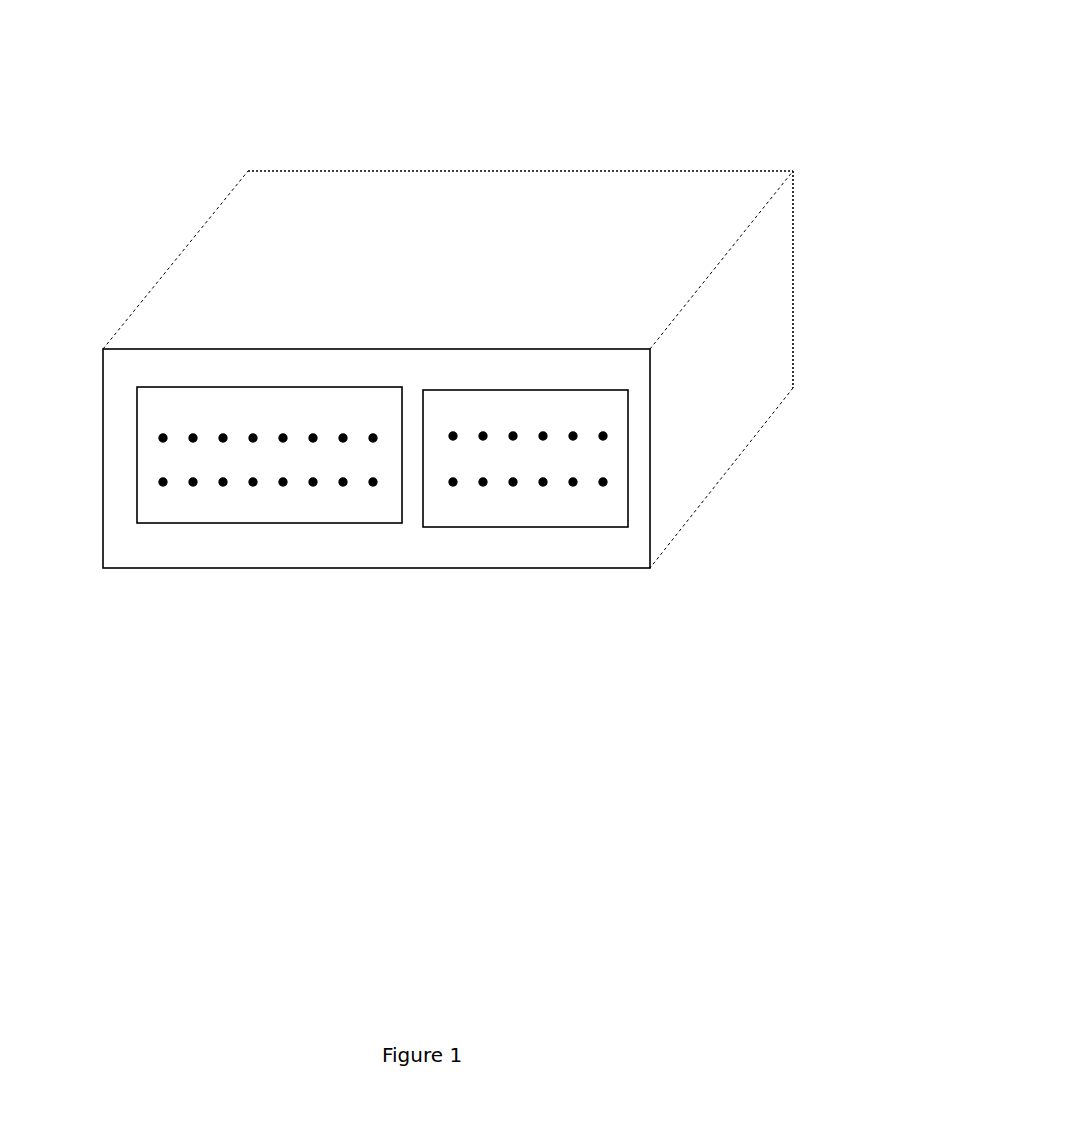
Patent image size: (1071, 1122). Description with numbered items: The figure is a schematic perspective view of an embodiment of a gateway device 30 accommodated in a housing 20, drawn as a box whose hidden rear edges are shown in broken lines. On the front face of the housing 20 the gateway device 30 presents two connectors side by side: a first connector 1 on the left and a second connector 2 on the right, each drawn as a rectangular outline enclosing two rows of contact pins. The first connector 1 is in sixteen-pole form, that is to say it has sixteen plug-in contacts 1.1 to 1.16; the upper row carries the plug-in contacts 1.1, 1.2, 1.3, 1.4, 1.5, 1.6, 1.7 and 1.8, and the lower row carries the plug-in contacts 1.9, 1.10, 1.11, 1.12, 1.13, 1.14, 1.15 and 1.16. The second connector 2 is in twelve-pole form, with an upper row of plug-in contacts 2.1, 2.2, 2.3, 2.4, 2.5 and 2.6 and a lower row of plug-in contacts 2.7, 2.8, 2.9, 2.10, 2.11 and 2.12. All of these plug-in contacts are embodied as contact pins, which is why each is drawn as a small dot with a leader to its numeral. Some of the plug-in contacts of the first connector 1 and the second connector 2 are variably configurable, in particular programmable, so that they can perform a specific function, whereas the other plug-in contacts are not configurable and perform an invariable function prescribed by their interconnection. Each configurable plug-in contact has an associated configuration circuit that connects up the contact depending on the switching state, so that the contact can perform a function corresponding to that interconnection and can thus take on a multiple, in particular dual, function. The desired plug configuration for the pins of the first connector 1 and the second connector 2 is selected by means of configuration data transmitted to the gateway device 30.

The gateway device 30 is at (195, 92).
The housing 20 is at (640, 210).
The first connector 1 is at (150, 472).
The second connector 2 is at (618, 460).
The plug-in contact 1.1 is at (163, 434).
The plug-in contact 1.2 is at (193, 434).
The plug-in contact 1.3 is at (223, 434).
The plug-in contact 1.4 is at (253, 434).
The plug-in contact 1.5 is at (283, 434).
The plug-in contact 1.6 is at (313, 434).
The plug-in contact 1.7 is at (343, 434).
The plug-in contact 1.8 is at (373, 434).
The plug-in contact 1.9 is at (163, 486).
The plug-in contact 1.10 is at (193, 486).
The plug-in contact 1.11 is at (223, 486).
The plug-in contact 1.12 is at (253, 486).
The plug-in contact 1.13 is at (283, 486).
The plug-in contact 1.14 is at (313, 486).
The plug-in contact 1.15 is at (343, 486).
The plug-in contact 1.16 is at (373, 486).
The plug-in contact 2.1 is at (453, 432).
The plug-in contact 2.2 is at (483, 432).
The plug-in contact 2.3 is at (513, 432).
The plug-in contact 2.4 is at (543, 432).
The plug-in contact 2.5 is at (573, 432).
The plug-in contact 2.6 is at (603, 432).
The plug-in contact 2.7 is at (453, 486).
The plug-in contact 2.8 is at (483, 486).
The plug-in contact 2.9 is at (513, 486).
The plug-in contact 2.10 is at (543, 486).
The plug-in contact 2.11 is at (573, 486).
The plug-in contact 2.12 is at (603, 486).